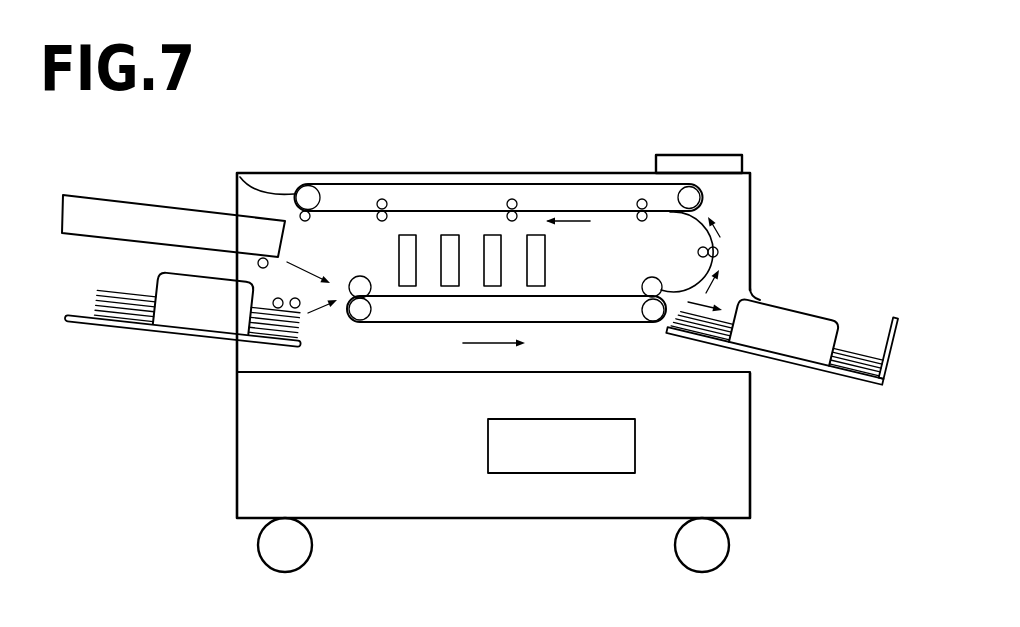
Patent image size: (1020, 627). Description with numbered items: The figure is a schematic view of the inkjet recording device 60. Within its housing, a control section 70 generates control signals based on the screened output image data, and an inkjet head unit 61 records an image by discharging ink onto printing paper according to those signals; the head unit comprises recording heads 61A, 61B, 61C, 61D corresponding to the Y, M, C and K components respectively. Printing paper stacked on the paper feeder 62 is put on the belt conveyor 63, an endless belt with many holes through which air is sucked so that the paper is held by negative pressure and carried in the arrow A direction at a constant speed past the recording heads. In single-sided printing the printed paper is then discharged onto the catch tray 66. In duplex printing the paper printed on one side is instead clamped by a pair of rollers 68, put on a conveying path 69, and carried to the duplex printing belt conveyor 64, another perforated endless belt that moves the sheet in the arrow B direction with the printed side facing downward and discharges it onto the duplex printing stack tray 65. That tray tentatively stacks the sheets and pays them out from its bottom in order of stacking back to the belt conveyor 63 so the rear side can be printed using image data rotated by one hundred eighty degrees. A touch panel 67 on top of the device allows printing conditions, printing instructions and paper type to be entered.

The inkjet recording device 60 is at (584, 564).
The inkjet head unit 61 is at (580, 267).
The recording head 61A is at (411, 240).
The recording head 61B is at (452, 240).
The recording head 61C is at (495, 240).
The recording head 61D is at (535, 240).
The paper feeder 62 is at (162, 333).
The belt conveyor 63 is at (423, 330).
The duplex printing belt conveyor 64 is at (238, 180).
The duplex printing stack tray 65 is at (80, 195).
The catch tray 66 is at (807, 302).
The touch panel 67 is at (723, 155).
The pair of rollers 68 is at (653, 320).
The conveying path 69 is at (697, 256).
The control section 70 is at (636, 437).